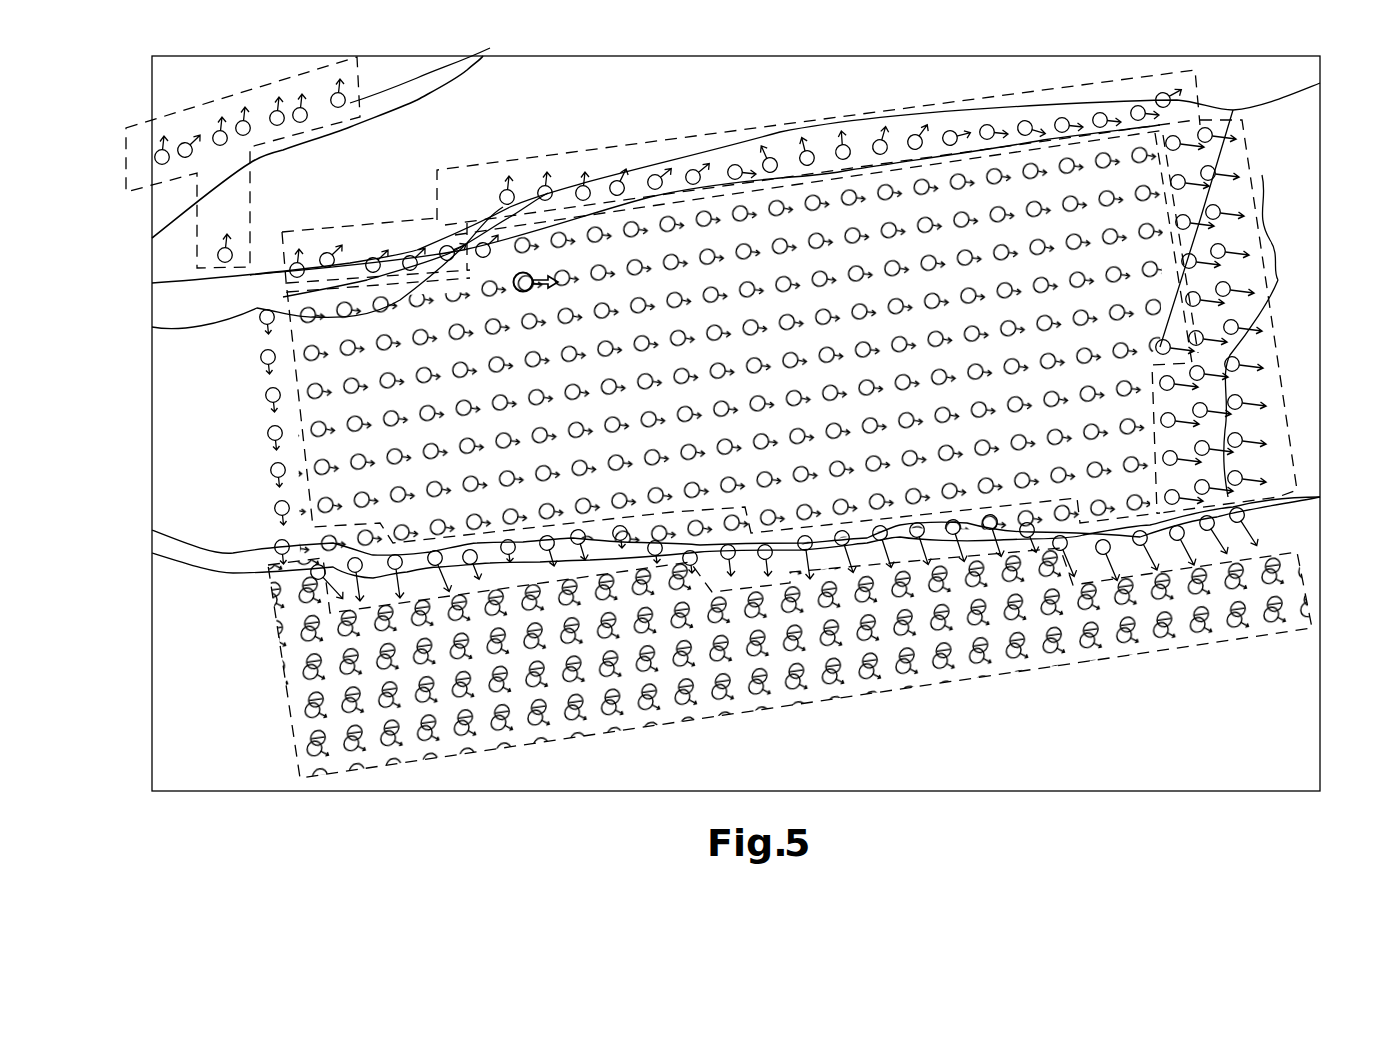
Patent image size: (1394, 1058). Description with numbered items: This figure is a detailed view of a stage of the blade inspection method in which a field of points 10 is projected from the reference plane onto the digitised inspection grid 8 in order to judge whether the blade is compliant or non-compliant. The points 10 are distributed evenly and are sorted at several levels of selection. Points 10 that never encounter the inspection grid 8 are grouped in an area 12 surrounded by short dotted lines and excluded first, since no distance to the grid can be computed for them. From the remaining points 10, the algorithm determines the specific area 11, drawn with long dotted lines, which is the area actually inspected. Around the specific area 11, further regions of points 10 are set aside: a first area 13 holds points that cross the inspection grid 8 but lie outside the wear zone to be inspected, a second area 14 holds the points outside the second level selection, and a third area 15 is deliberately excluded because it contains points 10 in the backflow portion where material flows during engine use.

The inspection grid 8 is at (190, 418).
The points 10 is at (449, 250).
The specific area 11 is at (690, 178).
The area of excluded points 12 is at (963, 692).
The first area 13 is at (122, 115).
The second area 14 is at (1275, 274).
The third area 15 is at (590, 135).